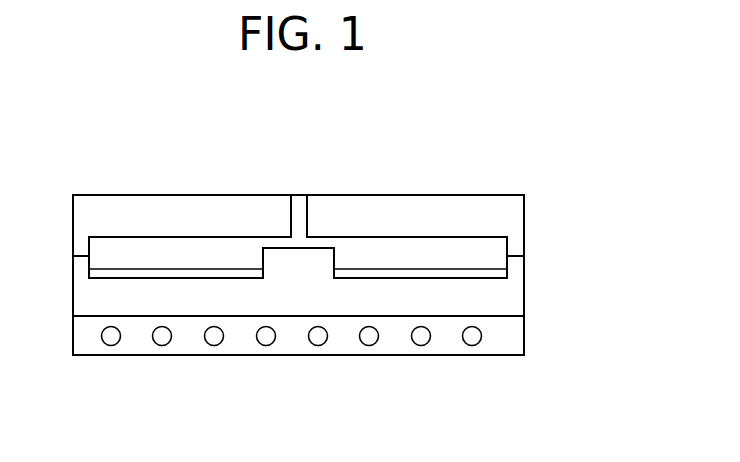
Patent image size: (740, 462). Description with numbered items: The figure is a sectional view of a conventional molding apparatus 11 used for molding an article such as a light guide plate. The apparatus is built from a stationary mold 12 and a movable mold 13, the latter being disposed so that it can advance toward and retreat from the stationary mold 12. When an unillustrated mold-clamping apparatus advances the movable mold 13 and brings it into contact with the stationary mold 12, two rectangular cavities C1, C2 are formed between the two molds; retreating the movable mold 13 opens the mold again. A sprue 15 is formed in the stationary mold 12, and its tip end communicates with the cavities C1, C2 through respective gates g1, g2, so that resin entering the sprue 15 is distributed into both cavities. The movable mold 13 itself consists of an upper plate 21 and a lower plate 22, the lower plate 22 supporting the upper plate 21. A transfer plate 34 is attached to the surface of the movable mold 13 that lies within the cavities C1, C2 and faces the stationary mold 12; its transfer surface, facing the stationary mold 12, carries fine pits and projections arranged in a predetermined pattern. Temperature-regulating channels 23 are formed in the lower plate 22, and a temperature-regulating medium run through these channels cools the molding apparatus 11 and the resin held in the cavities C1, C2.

The molding apparatus 11 is at (83, 191).
The stationary mold 12 is at (534, 230).
The movable mold 13 is at (620, 272).
The sprue 15 is at (301, 213).
The upper plate 21 is at (534, 300).
The lower plate 22 is at (534, 340).
The temperature-regulating channels 23 is at (111, 346).
The transfer plate 34 is at (147, 269).
The cavity C1 is at (187, 247).
The cavity C2 is at (405, 248).
The gate g1 is at (280, 242).
The gate g2 is at (318, 242).